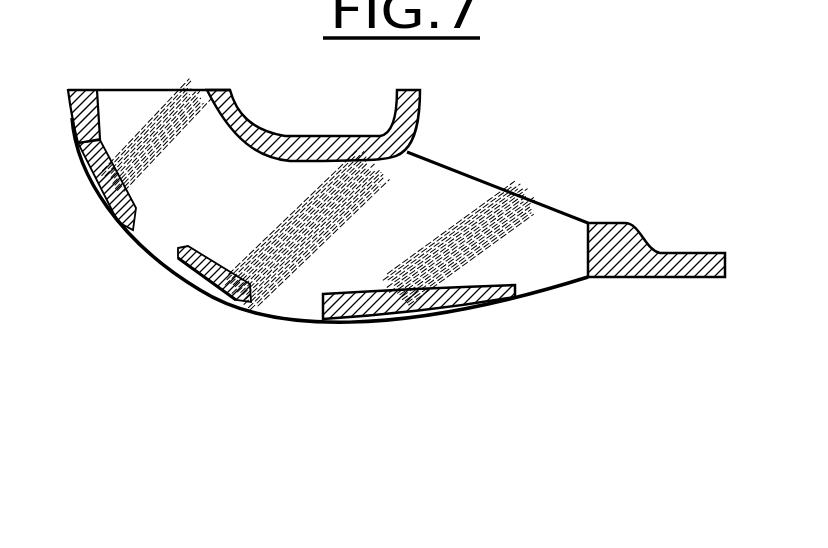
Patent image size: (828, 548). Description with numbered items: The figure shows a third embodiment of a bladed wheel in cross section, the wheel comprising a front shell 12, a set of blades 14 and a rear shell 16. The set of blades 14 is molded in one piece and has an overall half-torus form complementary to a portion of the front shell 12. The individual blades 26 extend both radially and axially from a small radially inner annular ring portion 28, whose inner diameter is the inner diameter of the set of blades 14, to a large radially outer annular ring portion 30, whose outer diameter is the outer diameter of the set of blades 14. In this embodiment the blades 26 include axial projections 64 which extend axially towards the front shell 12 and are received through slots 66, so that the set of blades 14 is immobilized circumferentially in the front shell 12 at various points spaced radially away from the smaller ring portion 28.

The front shell 12 is at (455, 328).
The set of blades 14 is at (502, 212).
The rear shell 16 is at (345, 130).
The blades 26 is at (440, 200).
The radially inner annular ring portion 28 is at (727, 265).
The radially outer annular ring portion 30 is at (90, 92).
The axial projections 64 is at (270, 305).
The slots 66 is at (137, 225).